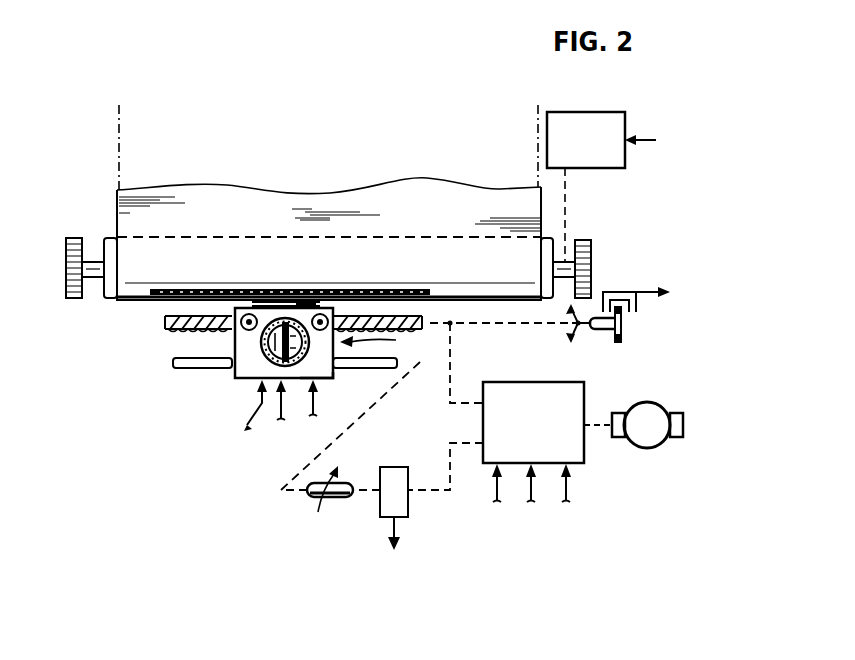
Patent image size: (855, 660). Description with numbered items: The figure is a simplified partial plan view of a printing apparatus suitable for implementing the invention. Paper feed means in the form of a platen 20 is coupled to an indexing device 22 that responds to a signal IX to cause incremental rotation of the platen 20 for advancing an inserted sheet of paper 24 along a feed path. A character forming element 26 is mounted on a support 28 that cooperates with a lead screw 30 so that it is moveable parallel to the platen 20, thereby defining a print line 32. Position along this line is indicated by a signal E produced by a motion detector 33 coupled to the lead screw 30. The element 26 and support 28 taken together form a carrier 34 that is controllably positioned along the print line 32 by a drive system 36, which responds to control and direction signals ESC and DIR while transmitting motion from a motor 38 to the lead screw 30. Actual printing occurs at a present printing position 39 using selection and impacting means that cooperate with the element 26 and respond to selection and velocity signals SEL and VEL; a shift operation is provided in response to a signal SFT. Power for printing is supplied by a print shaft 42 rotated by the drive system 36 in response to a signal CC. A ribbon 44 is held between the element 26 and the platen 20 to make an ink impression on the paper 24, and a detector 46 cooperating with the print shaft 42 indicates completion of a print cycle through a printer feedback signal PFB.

The platen 20 is at (113, 236).
The indexing device 22 is at (565, 116).
The sheet of paper 24 is at (386, 186).
The character forming element 26 is at (272, 346).
The support 28 is at (330, 372).
The lead screw 30 is at (170, 332).
The print line 32 is at (163, 291).
The motion detector 33 is at (630, 324).
The carrier 34 is at (380, 345).
The drive system 36 is at (583, 393).
The motor 38 is at (650, 448).
The present printing position 39 is at (287, 312).
The print shaft 42 is at (172, 365).
The ribbon 44 is at (312, 305).
The detector 46 is at (388, 468).